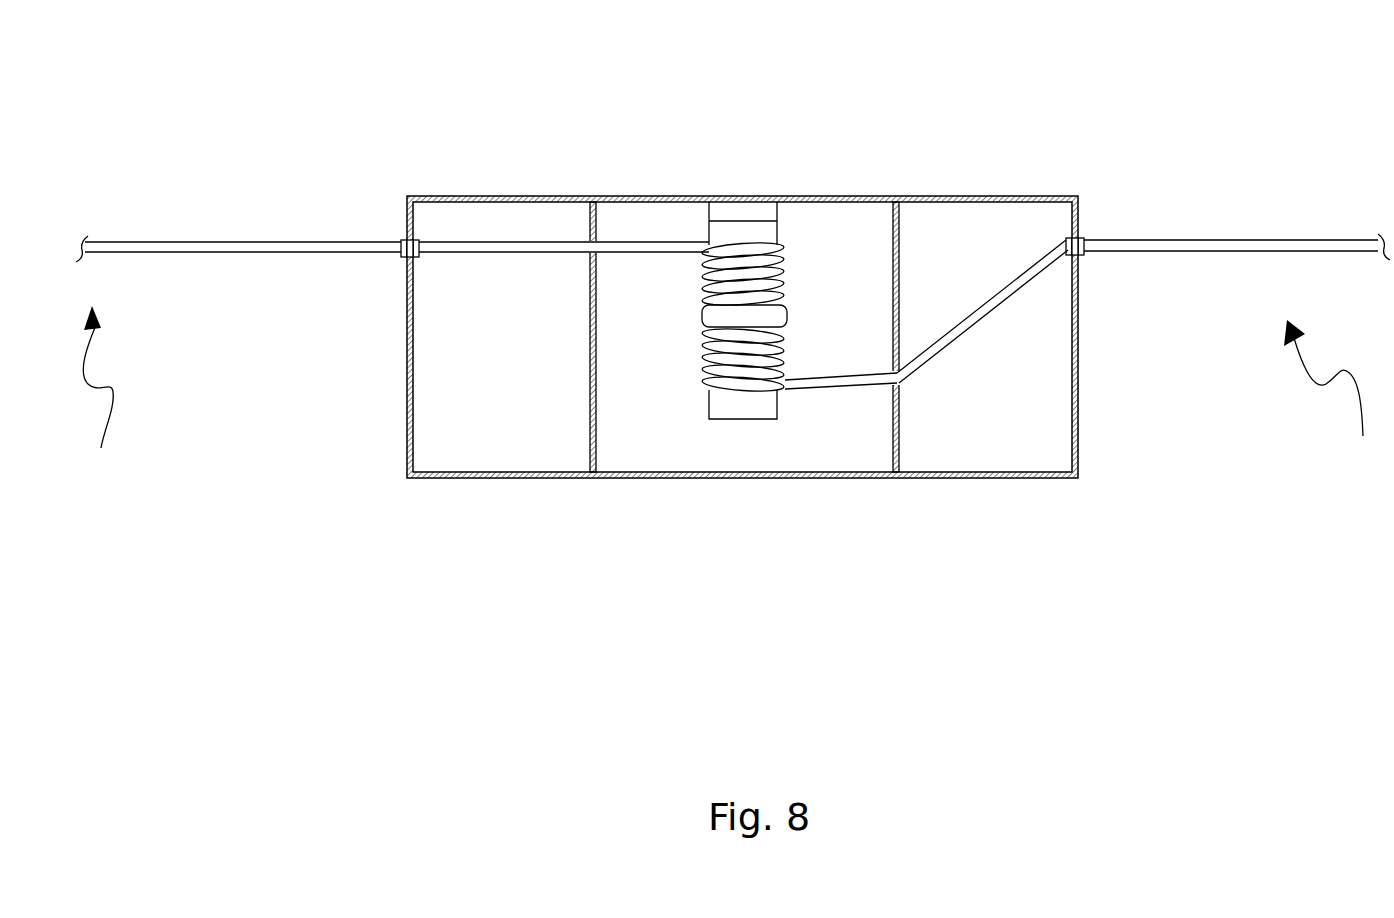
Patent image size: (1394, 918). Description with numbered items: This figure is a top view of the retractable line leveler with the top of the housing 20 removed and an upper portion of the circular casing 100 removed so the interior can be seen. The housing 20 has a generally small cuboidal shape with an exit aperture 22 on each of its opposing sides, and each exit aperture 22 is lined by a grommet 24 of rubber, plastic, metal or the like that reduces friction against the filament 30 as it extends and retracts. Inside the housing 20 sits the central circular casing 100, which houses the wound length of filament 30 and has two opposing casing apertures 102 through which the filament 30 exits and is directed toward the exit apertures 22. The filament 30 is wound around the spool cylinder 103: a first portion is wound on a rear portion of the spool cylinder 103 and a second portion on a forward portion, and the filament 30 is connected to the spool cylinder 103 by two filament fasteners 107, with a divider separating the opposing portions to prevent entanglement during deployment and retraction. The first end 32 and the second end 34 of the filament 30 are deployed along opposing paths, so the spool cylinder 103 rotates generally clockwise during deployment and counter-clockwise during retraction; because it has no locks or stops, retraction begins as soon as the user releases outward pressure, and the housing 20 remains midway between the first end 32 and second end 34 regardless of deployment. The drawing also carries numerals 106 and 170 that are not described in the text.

The housing 20 is at (407, 449).
The exit aperture 22 is at (402, 242).
The grommet 24 is at (405, 240).
The filament 30 is at (163, 242).
The first end 32 is at (98, 393).
The second end 34 is at (1330, 391).
The circular casing 100 is at (590, 417).
The casing aperture 102 is at (589, 250).
The spool cylinder 103 is at (777, 419).
The lower winding 106 is at (705, 332).
The filament fastener 107 is at (710, 395).
The coil winding 170 is at (780, 242).